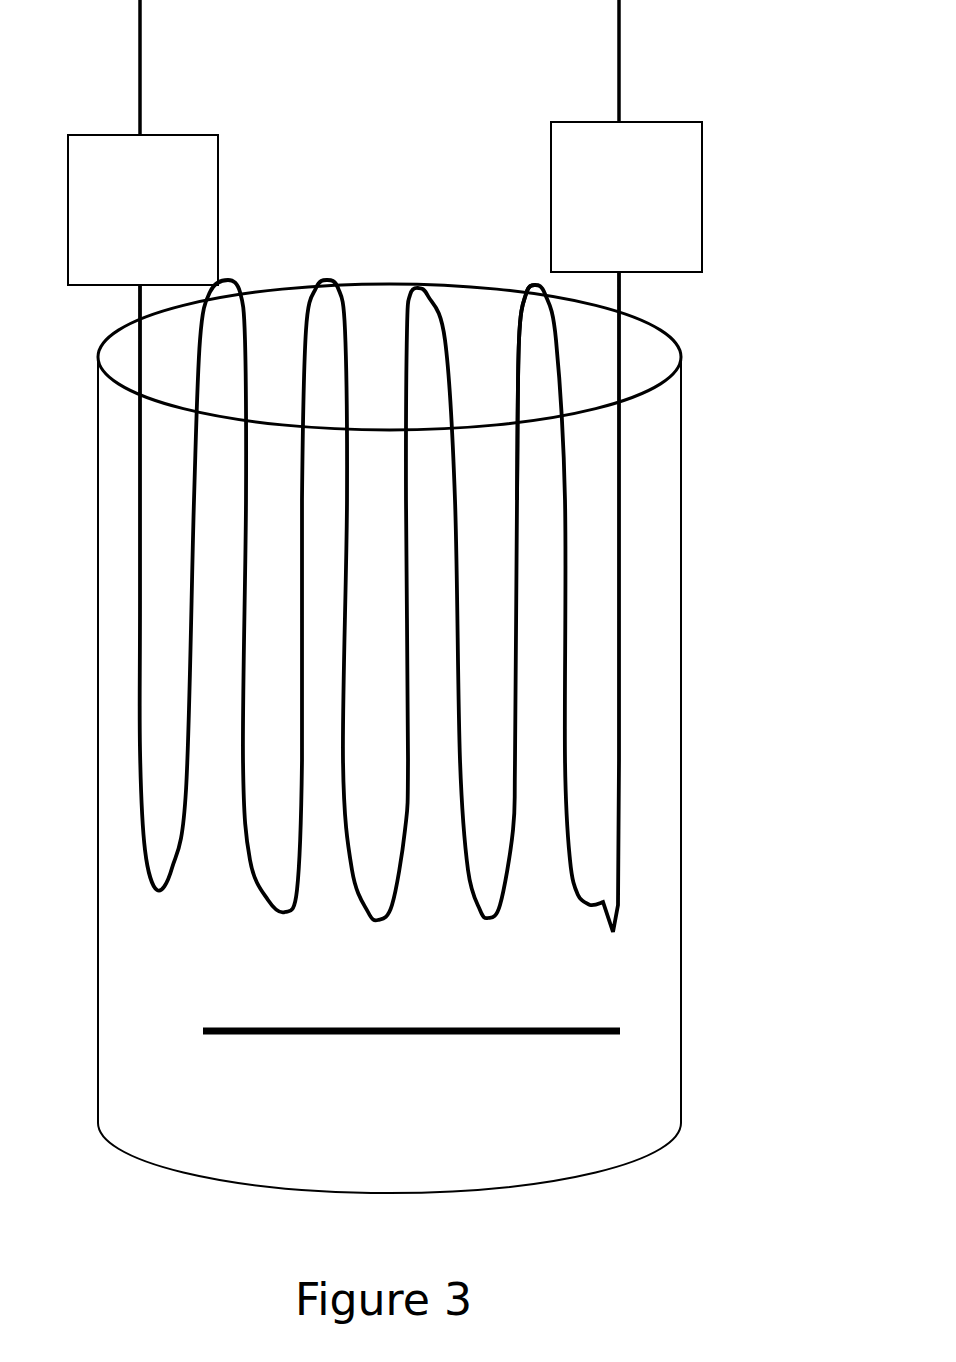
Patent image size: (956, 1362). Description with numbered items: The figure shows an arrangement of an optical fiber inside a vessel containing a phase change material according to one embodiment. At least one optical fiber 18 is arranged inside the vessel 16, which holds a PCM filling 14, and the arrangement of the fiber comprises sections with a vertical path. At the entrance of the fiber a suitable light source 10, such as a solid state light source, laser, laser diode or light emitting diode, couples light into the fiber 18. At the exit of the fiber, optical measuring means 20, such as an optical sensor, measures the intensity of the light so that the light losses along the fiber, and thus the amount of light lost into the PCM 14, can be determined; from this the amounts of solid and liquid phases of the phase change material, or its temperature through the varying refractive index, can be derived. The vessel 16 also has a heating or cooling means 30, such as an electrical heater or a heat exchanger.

The light source 10 is at (195, 173).
The optical measuring means 20 is at (587, 210).
The PCM filling 14 is at (277, 475).
The vessel 16 is at (366, 325).
The optical fiber 18 is at (512, 327).
The heating or cooling means 30 is at (658, 1035).